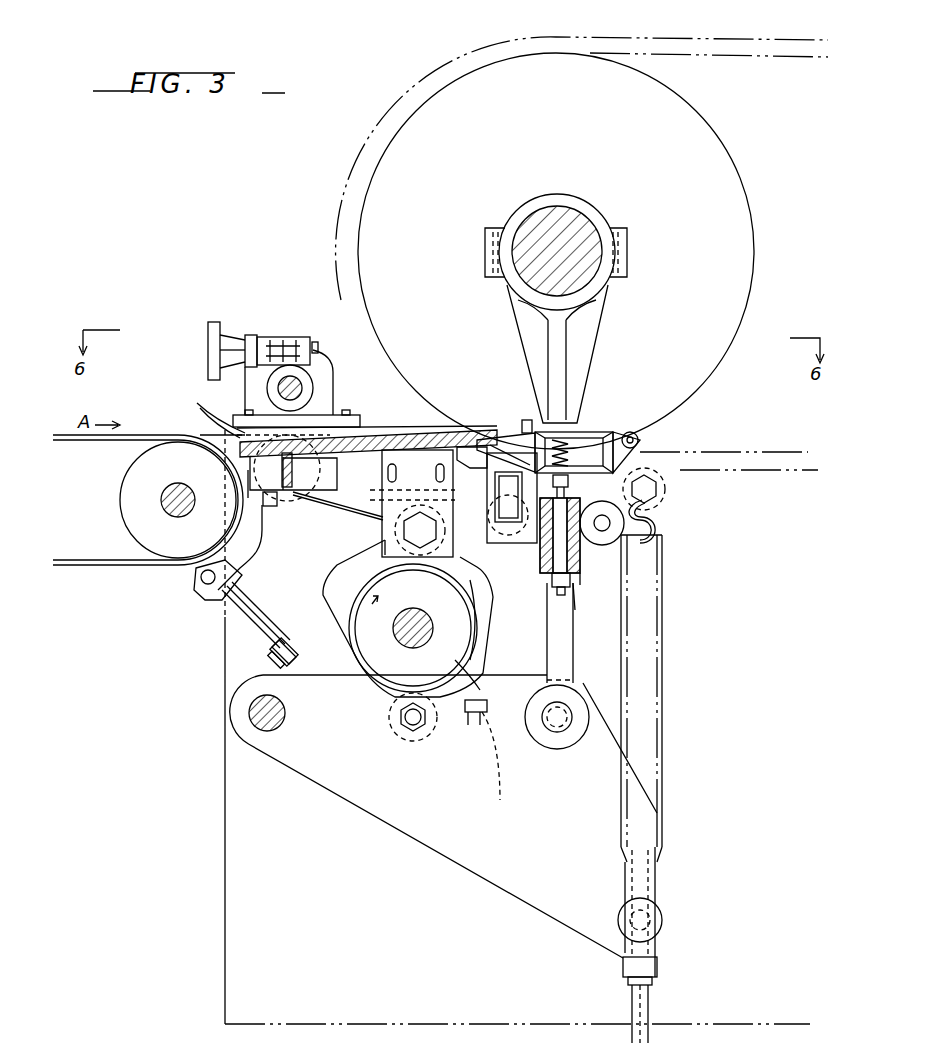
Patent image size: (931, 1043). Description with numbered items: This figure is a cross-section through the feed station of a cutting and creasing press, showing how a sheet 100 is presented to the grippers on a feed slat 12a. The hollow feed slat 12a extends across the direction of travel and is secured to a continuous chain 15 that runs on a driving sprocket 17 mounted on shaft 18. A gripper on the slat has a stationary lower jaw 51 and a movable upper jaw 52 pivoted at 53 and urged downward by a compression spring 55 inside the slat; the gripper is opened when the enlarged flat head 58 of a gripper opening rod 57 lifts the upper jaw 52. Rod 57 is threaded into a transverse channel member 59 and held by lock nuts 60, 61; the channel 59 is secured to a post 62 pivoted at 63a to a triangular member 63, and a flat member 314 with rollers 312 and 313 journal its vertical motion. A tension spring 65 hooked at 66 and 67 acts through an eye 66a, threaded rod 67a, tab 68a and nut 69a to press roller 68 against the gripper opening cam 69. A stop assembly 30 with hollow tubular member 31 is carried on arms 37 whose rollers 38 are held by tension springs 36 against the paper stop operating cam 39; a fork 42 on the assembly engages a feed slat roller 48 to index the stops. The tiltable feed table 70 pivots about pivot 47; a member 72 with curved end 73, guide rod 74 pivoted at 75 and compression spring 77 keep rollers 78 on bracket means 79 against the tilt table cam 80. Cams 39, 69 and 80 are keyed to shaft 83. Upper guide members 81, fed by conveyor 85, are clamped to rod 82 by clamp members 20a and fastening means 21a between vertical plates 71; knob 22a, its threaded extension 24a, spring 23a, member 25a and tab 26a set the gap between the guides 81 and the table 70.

The continuous chain 15 is at (808, 52).
The driving sprocket 17 is at (578, 159).
The shaft 18 is at (570, 226).
The vertical plate 71 is at (290, 336).
The fastening means 21a is at (287, 340).
The compression spring 23a is at (338, 331).
The member 25a is at (345, 347).
The threaded extension 24a is at (358, 366).
The rod 82 is at (313, 389).
The clamp member 20a is at (322, 410).
The tab 26a is at (252, 325).
The knob 22a is at (208, 346).
The conveyor 85 is at (142, 408).
The upper guide member 81 is at (205, 408).
The shaft 83 is at (413, 649).
The pivot 47 is at (235, 436).
The sheet 100 is at (420, 432).
The tiltable feed table 70 is at (358, 452).
The arm 37 is at (322, 500).
The member 72 is at (263, 536).
The curved inwardly extending end 73 is at (198, 590).
The pivot 75 is at (200, 578).
The guide rod 74 is at (240, 606).
The compression spring 77 is at (260, 641).
The roller 38 is at (385, 500).
The roller 78 is at (400, 528).
The stationary lower jaw 51 is at (485, 462).
The feed slat roller 48 is at (490, 469).
The hollow tubular member 31 is at (495, 495).
The stop assembly 30 is at (500, 520).
The movable upper jaw 52 is at (505, 435).
The fork 42 is at (527, 421).
The feed slat 12a is at (604, 440).
The compression spring 55 is at (562, 440).
The pivot 53 is at (640, 440).
The lock nut 61 is at (554, 481).
The flat member 314 is at (541, 575).
The roller 312 is at (548, 553).
The roller 313 is at (603, 546).
The enlarged flat head 58 is at (631, 490).
The gripper opening rod 57 is at (634, 512).
The hook 67 is at (660, 510).
The tension spring 65 is at (668, 639).
The hook 66 is at (660, 913).
The eye 66a is at (663, 921).
The tab 68a is at (658, 970).
The nut 69a is at (628, 981).
The threaded rod 67a is at (650, 999).
The post 62 is at (575, 646).
The transverse channel member 59 is at (580, 586).
The lock nut 60 is at (576, 610).
The pivot 63a is at (558, 750).
The triangular member 63 is at (492, 865).
The paper stop operating cam 39 is at (490, 610).
The bracket means 79 is at (383, 552).
The tilt table cam 80 is at (490, 643).
The gripper opening cam 69 is at (470, 670).
The tension spring 36 is at (487, 702).
The roller 68 is at (413, 742).